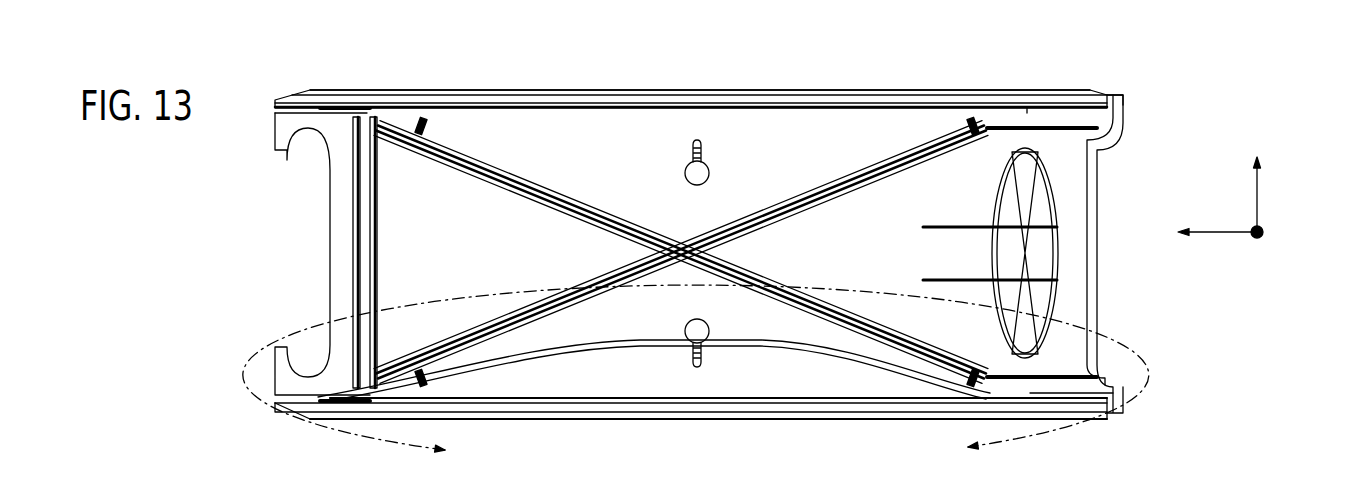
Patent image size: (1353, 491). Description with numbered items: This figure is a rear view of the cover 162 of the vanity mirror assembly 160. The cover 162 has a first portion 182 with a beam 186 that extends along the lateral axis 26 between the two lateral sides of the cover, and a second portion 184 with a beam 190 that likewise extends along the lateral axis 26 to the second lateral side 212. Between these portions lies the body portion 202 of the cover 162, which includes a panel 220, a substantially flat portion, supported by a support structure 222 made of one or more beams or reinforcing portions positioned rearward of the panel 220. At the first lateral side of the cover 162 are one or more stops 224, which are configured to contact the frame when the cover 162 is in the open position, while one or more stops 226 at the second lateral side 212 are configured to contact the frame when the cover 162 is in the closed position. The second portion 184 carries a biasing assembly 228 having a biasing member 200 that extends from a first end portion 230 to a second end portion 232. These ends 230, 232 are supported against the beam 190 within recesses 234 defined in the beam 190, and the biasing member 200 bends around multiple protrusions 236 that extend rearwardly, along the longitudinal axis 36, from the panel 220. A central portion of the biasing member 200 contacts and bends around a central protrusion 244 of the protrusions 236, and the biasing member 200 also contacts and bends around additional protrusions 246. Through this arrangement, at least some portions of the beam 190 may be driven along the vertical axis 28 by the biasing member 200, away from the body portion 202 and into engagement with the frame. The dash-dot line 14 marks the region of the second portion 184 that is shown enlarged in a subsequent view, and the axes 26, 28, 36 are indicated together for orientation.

The line 14- 14 is at (696, 388).
The lateral axis 26 is at (1227, 230).
The vertical axis 28 is at (1257, 204).
The longitudinal axis 36 is at (1260, 236).
The vanity mirror assembly 160 is at (1191, 101).
The cover 162 is at (462, 80).
The first portion 182 is at (956, 78).
The second portion 184 is at (514, 450).
The beam 186 is at (853, 92).
The beam 190 is at (527, 400).
The biasing member 200 is at (728, 343).
The body portion 202 is at (542, 78).
The second lateral side 212 is at (1177, 284).
The panel 220 is at (447, 127).
The support structure 222 is at (397, 125).
The stops 224 is at (265, 160).
The stops 226 is at (1127, 100).
The biasing assembly 228 is at (788, 378).
The first end portion 230 is at (345, 400).
The second end portion 232 is at (1060, 400).
The recesses 234 is at (323, 398).
The protrusions 236 is at (684, 247).
The central protrusion 244 is at (697, 368).
The additional protrusions 246 is at (684, 211).